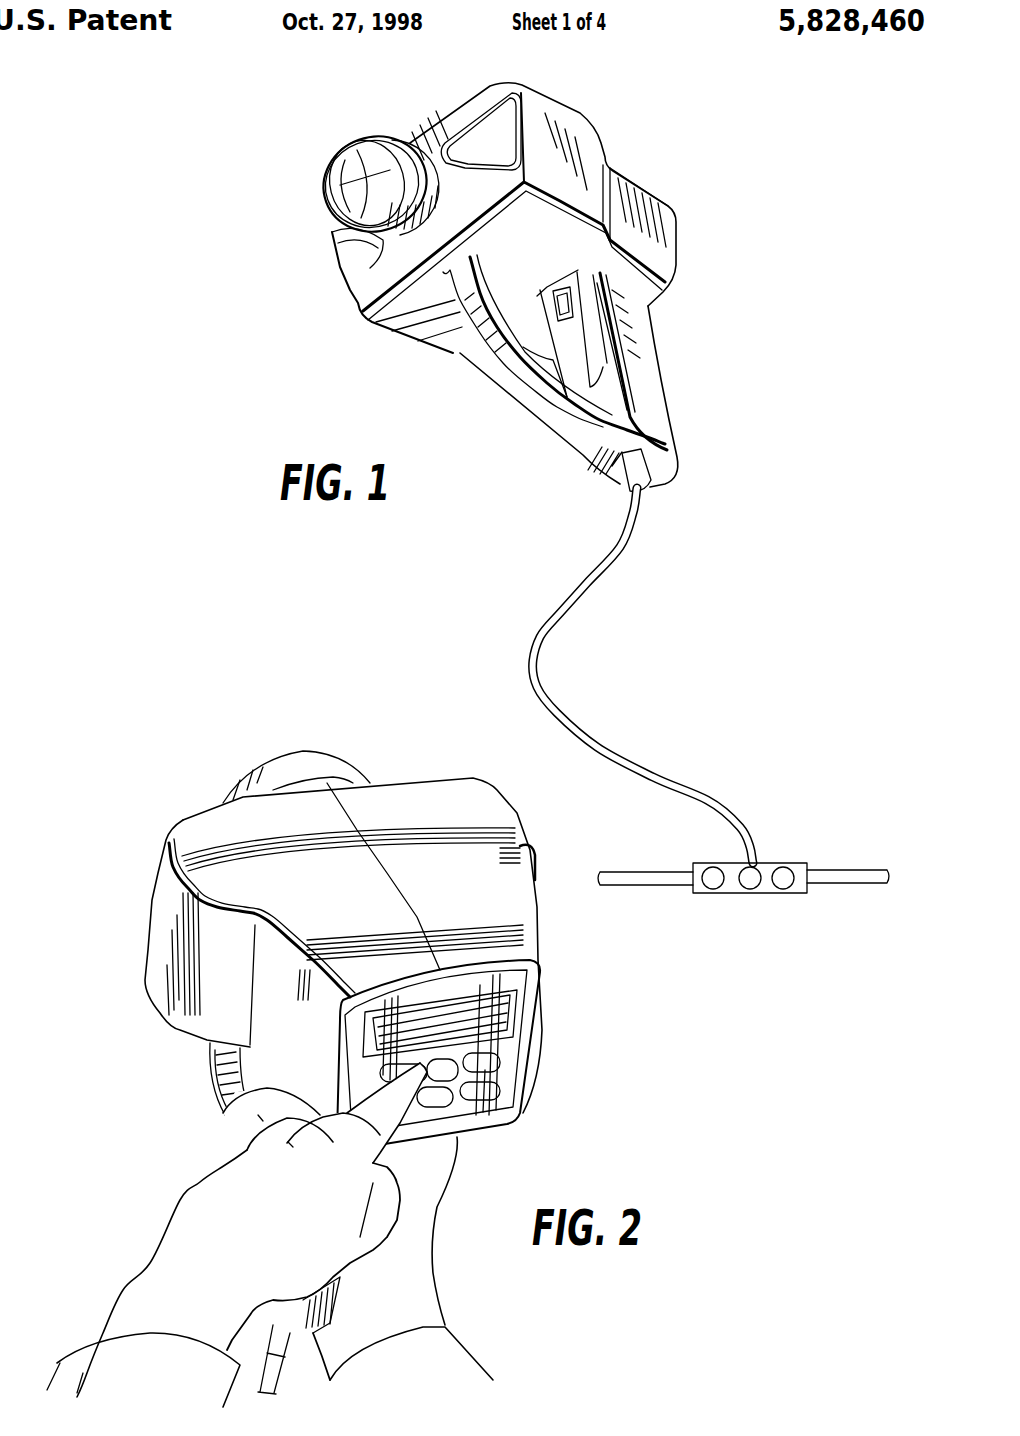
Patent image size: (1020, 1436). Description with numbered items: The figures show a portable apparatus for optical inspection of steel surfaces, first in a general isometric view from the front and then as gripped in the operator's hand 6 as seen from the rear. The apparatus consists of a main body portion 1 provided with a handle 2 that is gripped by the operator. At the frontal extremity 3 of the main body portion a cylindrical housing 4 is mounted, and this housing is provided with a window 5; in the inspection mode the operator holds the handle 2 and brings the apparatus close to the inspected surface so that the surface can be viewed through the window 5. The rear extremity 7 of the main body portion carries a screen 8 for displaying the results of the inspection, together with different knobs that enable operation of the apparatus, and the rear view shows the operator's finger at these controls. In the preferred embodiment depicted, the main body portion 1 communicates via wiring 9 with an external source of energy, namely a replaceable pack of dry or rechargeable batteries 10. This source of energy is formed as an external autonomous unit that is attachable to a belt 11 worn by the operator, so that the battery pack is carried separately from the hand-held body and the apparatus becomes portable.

In FIG. 1, the main body portion 1 is at (606, 168).
In FIG. 1, the handle 2 is at (640, 378).
In FIG. 1, the frontal extremity 3 is at (440, 127).
In FIG. 2, the frontal extremity 3 is at (467, 800).
In FIG. 1, the cylindrical housing 4 is at (403, 147).
In FIG. 2, the cylindrical housing 4 is at (338, 767).
In FIG. 1, the window 5 is at (353, 183).
In FIG. 2, the operator's hand 6 is at (433, 1187).
In FIG. 1, the rear extremity 7 is at (673, 256).
In FIG. 2, the rear extremity 7 is at (520, 942).
In FIG. 2, the screen 8 is at (493, 1017).
In FIG. 1, the wiring 9 is at (590, 590).
In FIG. 1, the replaceable pack of batteries 10 is at (773, 860).
In FIG. 1, the belt 11 is at (650, 873).